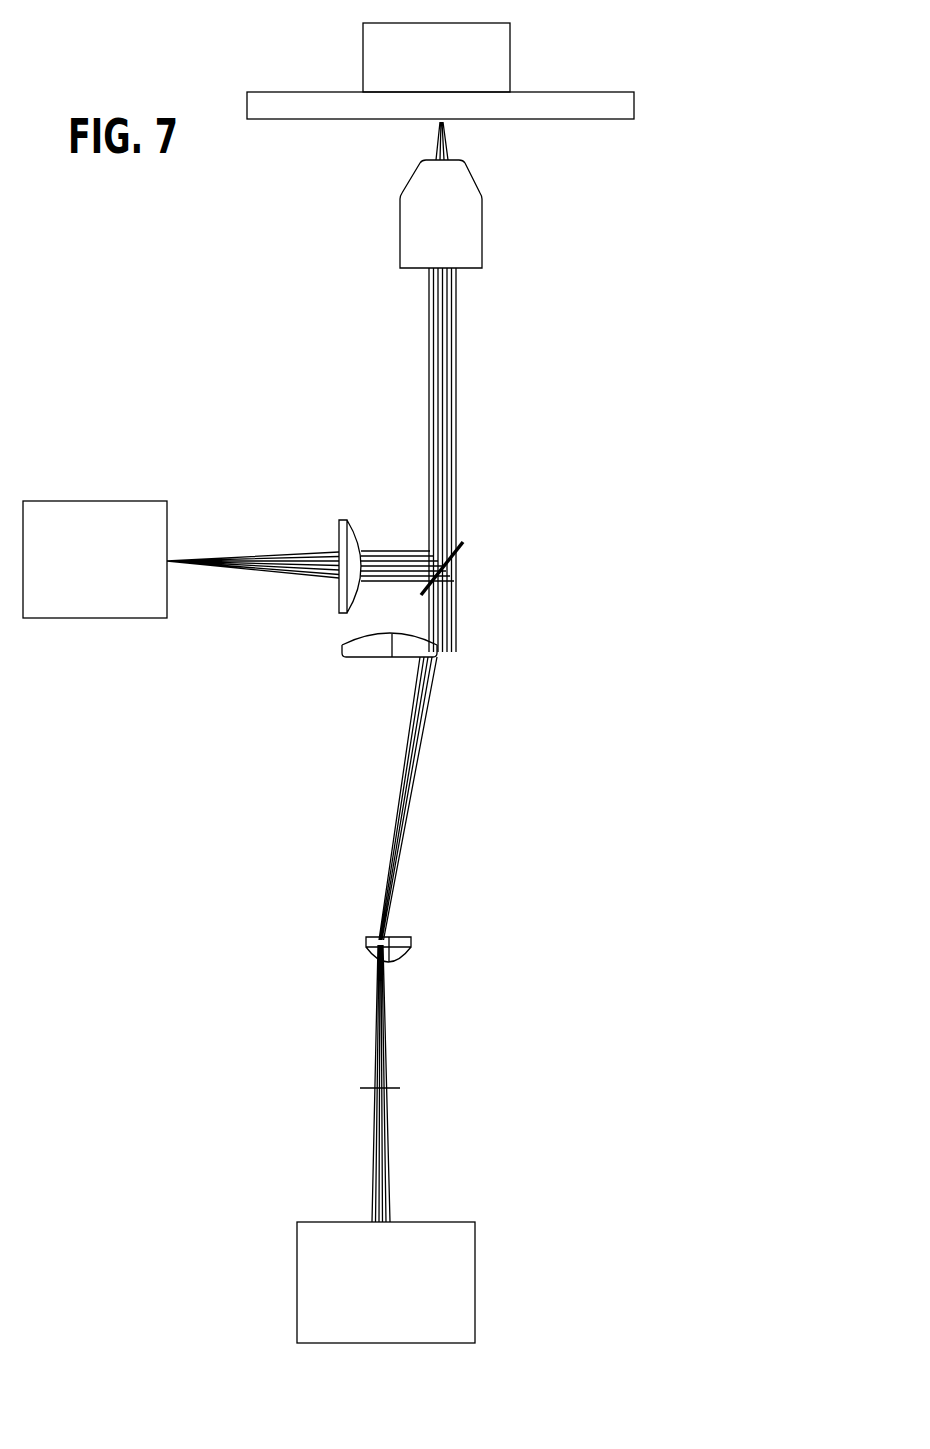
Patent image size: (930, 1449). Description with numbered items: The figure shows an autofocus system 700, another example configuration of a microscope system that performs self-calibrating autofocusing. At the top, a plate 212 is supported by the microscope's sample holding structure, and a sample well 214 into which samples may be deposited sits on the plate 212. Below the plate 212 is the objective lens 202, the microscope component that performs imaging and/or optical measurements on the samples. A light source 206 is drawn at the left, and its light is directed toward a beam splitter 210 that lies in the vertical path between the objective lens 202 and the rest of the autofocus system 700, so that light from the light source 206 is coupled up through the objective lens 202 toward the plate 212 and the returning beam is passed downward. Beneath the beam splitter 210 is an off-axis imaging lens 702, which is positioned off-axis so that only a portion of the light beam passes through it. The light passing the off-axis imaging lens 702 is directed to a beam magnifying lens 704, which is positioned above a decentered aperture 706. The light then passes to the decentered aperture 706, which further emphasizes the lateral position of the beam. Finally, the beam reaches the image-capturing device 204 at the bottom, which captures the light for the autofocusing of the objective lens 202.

The autofocus system 700 is at (657, 417).
The objective lens 202 is at (458, 240).
The image-capturing device 204 is at (425, 1230).
The light source 206 is at (118, 613).
The beam splitter 210 is at (464, 543).
The plate 212 is at (636, 107).
The sample well 214 is at (512, 43).
The off-axis imaging lens 702 is at (462, 645).
The beam magnifying lens 704 is at (360, 940).
The decentered aperture 706 is at (427, 1088).